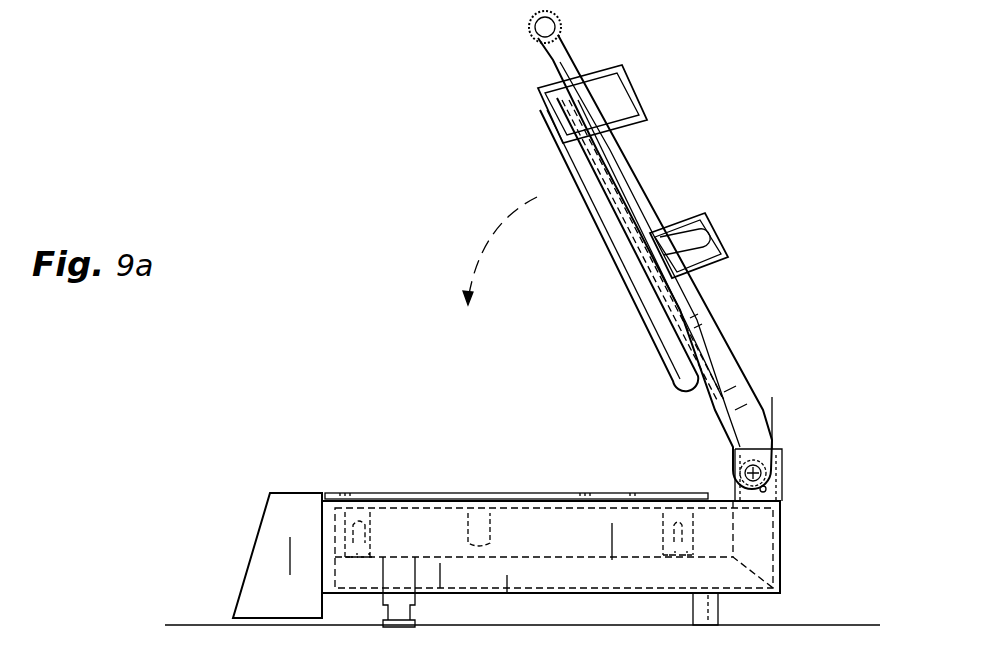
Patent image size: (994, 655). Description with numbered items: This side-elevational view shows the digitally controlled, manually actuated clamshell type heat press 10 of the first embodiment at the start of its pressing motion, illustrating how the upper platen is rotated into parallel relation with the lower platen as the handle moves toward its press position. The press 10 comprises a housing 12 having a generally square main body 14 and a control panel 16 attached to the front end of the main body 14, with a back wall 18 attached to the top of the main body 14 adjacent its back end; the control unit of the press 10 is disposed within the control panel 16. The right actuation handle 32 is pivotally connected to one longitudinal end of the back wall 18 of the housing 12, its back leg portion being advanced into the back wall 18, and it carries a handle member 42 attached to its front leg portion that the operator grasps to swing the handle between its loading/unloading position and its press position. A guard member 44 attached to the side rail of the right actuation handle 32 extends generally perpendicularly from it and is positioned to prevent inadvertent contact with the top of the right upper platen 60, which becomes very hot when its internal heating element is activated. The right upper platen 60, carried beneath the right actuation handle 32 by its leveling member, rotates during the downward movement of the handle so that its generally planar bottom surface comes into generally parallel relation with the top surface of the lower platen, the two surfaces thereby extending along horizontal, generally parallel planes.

The heat press 10 is at (856, 211).
The housing 12 is at (811, 533).
The main body 14 is at (505, 578).
The control panel 16 is at (270, 563).
The back wall 18 is at (783, 450).
The right actuation handle 32 is at (590, 49).
The handle member 42 is at (533, 32).
The guard member 44 is at (703, 212).
The right upper platen 60 is at (733, 305).